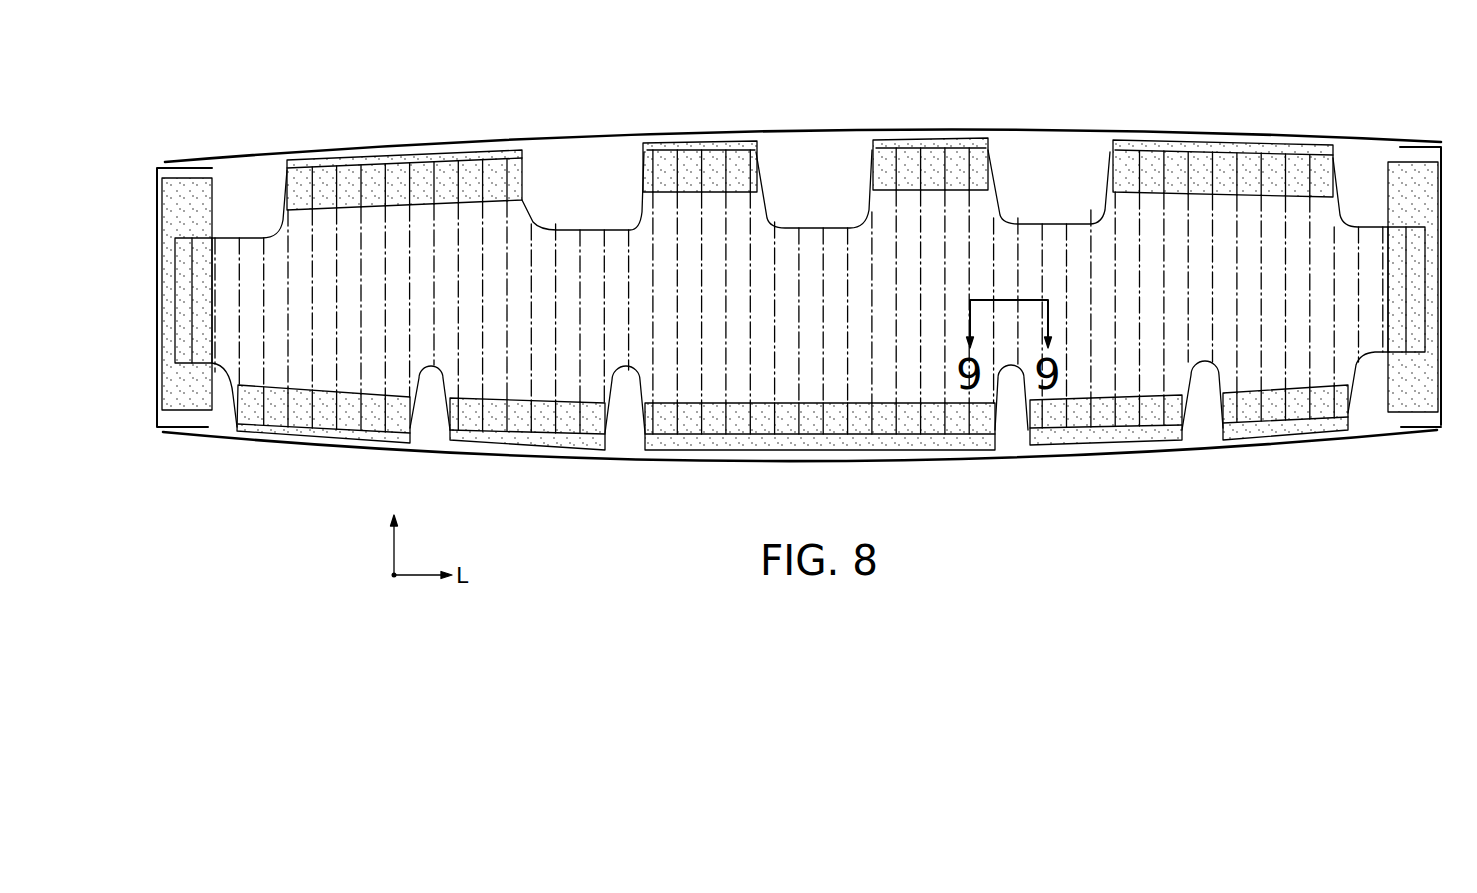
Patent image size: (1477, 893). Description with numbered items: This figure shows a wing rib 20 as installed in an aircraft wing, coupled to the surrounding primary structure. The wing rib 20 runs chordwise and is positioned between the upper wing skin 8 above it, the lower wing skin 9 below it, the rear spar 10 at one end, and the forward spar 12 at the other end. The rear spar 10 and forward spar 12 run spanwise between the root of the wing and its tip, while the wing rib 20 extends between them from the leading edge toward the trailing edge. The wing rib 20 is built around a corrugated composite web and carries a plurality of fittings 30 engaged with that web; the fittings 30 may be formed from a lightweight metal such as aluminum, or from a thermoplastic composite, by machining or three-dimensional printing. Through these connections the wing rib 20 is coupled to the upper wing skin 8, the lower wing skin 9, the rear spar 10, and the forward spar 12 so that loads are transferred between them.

The upper wing skin 8 is at (603, 124).
The lower wing skin 9 is at (647, 472).
The rear spar 10 is at (148, 158).
The forward spar 12 is at (1442, 138).
The wing rib 20 is at (444, 203).
The fitting 30 is at (213, 189).